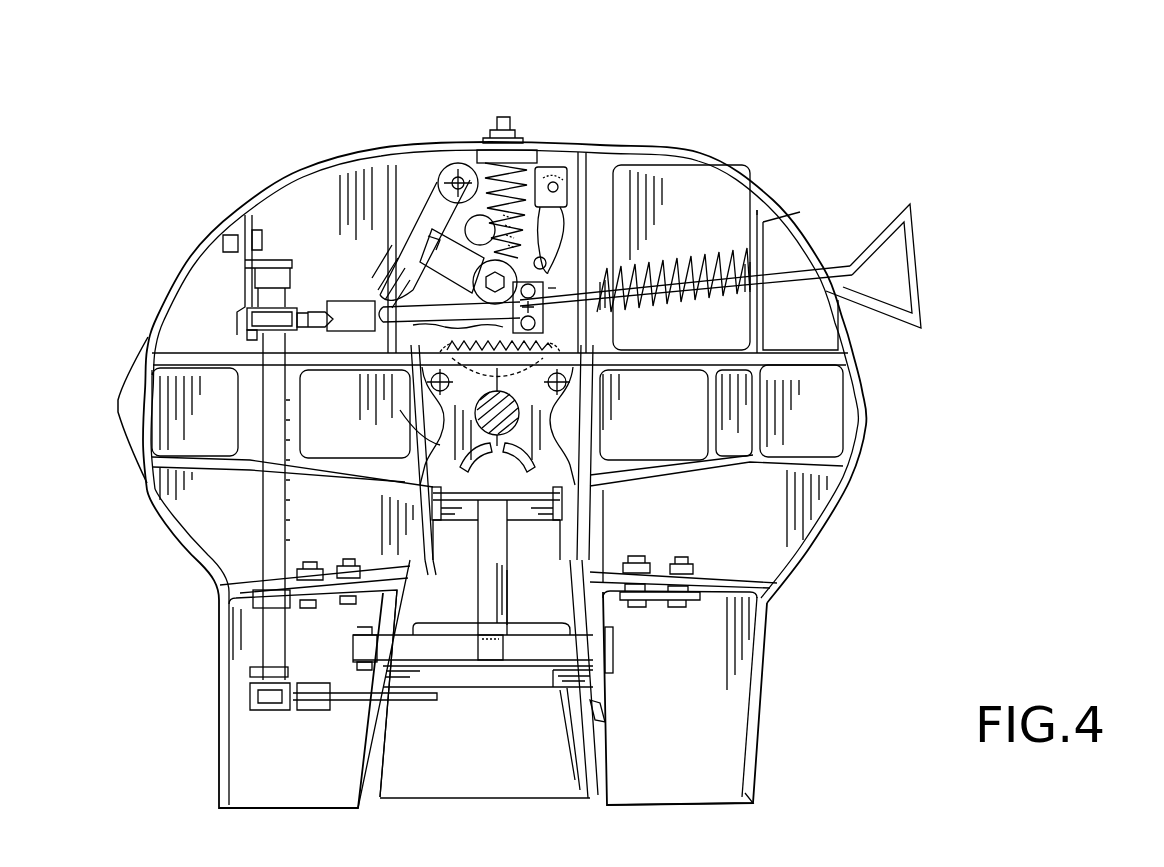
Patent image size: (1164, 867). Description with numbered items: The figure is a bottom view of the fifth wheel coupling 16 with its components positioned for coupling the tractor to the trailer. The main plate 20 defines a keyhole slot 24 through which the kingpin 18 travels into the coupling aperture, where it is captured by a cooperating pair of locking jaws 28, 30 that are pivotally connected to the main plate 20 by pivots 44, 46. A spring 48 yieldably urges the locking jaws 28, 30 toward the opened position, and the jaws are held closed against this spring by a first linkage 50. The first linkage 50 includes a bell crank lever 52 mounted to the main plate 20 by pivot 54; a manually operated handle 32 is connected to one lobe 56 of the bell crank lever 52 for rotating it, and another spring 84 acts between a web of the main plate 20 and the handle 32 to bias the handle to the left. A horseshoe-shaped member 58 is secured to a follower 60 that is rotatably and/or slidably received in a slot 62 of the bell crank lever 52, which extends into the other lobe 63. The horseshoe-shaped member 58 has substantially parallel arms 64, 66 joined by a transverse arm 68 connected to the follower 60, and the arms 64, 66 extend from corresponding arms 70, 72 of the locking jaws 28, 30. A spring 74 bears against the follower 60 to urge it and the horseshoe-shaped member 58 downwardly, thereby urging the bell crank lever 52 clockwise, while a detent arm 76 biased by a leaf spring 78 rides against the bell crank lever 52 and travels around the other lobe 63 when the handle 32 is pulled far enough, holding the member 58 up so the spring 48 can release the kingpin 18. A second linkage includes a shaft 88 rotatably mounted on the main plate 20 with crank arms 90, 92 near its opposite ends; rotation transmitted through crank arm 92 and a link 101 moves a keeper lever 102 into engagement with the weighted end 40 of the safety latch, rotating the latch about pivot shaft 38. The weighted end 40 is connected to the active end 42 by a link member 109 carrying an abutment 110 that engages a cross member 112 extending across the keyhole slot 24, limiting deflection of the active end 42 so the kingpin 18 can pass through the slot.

The fifth wheel coupling 16 is at (437, 130).
The kingpin 18 is at (510, 410).
The main plate 20 is at (820, 393).
The keyhole slot 24 is at (593, 787).
The locking jaw 28 is at (595, 383).
The locking jaw 30 is at (447, 400).
The handle 32 is at (817, 273).
The pivot shaft 38 is at (450, 648).
The weighted end 40 is at (483, 782).
The active end 42 is at (537, 510).
The pivot 44 is at (620, 385).
The pivot 46 is at (430, 384).
The spring 48 is at (547, 347).
The first linkage 50 is at (358, 268).
The bell crank lever 52 is at (433, 243).
The pivot 54 is at (450, 178).
The lobe 56 is at (375, 300).
The horseshoe-shaped member 58 is at (703, 383).
The follower 60 is at (548, 182).
The slot 62 is at (493, 293).
The other lobe 63 is at (548, 296).
The arm 64 is at (577, 447).
The arm 66 is at (440, 447).
The transverse arm 68 is at (557, 287).
The arm 70 is at (557, 470).
The arm 72 is at (437, 467).
The spring 74 is at (518, 150).
The detent arm 76 is at (555, 222).
The leaf spring 78 is at (540, 190).
The spring 84 is at (722, 265).
The shaft 88 is at (273, 517).
The crank arm 90 is at (245, 318).
The crank arm 92 is at (253, 673).
The link 101 is at (293, 703).
The keeper lever 102 is at (360, 697).
The link member 109 is at (487, 585).
The abutment 110 is at (493, 647).
The cross member 112 is at (590, 700).